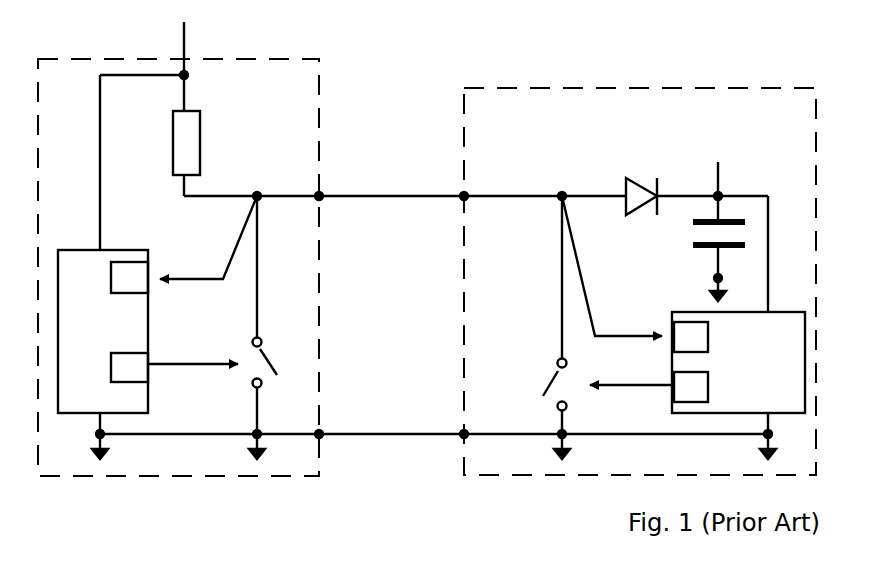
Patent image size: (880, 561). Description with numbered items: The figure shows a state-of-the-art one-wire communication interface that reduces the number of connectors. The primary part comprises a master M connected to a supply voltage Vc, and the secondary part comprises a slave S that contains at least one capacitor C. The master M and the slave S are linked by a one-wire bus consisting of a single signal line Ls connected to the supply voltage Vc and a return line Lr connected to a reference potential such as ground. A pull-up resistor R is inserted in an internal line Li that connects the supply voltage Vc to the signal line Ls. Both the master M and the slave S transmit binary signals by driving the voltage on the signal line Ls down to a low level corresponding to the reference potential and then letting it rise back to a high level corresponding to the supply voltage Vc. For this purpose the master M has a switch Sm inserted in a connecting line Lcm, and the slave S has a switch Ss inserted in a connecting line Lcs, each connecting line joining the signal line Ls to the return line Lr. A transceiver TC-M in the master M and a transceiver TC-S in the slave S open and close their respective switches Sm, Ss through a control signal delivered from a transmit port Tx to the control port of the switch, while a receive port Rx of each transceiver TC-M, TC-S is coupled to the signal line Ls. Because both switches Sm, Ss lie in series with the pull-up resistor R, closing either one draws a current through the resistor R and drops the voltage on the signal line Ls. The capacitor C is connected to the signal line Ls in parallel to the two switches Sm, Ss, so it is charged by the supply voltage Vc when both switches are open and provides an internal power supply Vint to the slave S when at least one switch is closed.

The supply voltage Vc is at (197, 20).
The pull-up resistor R is at (194, 156).
The internal line Li is at (215, 196).
The signal line Ls is at (383, 196).
The connecting line Lcm is at (260, 290).
The switch Sm is at (271, 362).
The return line Lr is at (382, 434).
The master M is at (183, 476).
The slave S is at (528, 475).
The connecting line Lcs is at (559, 315).
The switch Ss is at (550, 383).
The internal power supply Vint is at (745, 160).
The capacitor C is at (737, 217).
The transceiver TC-M is at (134, 339).
The transceiver TC-S is at (788, 369).
The receive port Rx is at (146, 289).
The transmit port Tx is at (144, 380).